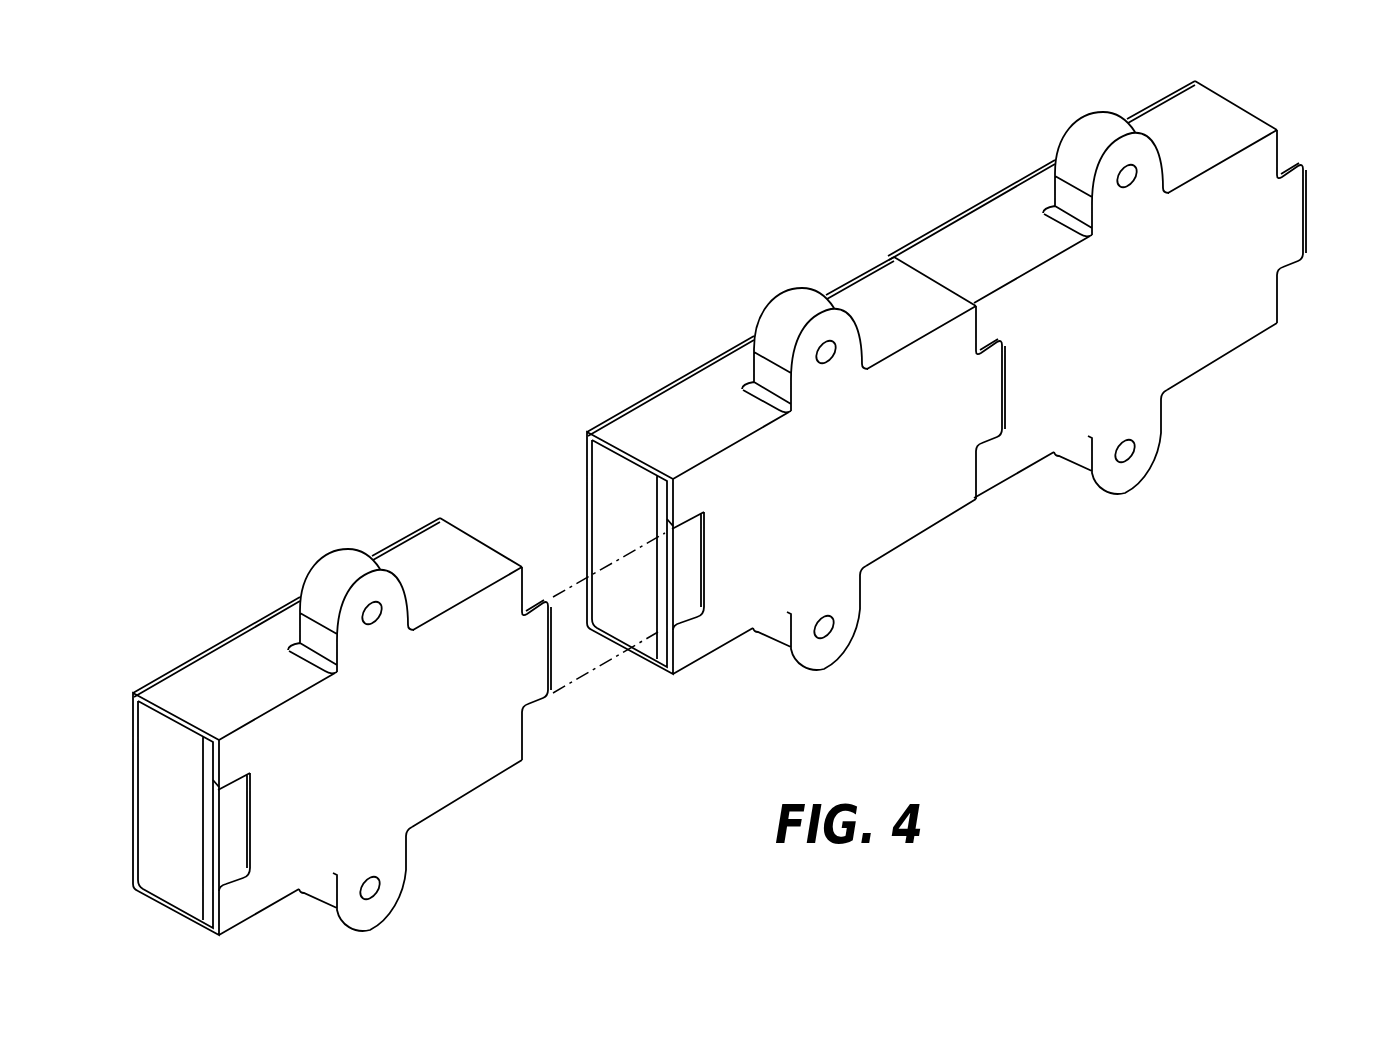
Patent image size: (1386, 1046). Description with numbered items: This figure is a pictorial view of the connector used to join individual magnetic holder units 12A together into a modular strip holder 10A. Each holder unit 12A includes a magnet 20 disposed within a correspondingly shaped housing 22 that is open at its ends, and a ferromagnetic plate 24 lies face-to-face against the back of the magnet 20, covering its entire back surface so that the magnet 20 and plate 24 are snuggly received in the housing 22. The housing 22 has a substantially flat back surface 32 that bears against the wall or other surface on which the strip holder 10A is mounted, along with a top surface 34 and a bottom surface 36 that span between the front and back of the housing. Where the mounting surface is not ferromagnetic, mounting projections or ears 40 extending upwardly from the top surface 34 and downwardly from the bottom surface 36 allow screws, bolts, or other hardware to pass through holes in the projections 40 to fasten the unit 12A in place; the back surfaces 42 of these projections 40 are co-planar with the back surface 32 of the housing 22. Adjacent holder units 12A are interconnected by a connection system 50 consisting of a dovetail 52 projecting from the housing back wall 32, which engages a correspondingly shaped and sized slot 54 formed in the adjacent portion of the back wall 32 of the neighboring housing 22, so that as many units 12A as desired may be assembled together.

The strip holder 10A is at (298, 328).
The magnetic holder unit 12A is at (433, 856).
The magnet 20 is at (177, 862).
The housing 22 is at (481, 538).
The ferromagnetic plate 24 is at (217, 820).
The back surface 32 is at (373, 738).
The top surface 34 is at (258, 661).
The bottom surface 36 is at (643, 657).
The mounting projection 40 is at (315, 568).
The back surface of mounting projection 42 is at (390, 582).
The connection system 50 is at (992, 455).
The dovetail 52 is at (545, 648).
The slot 54 is at (225, 862).